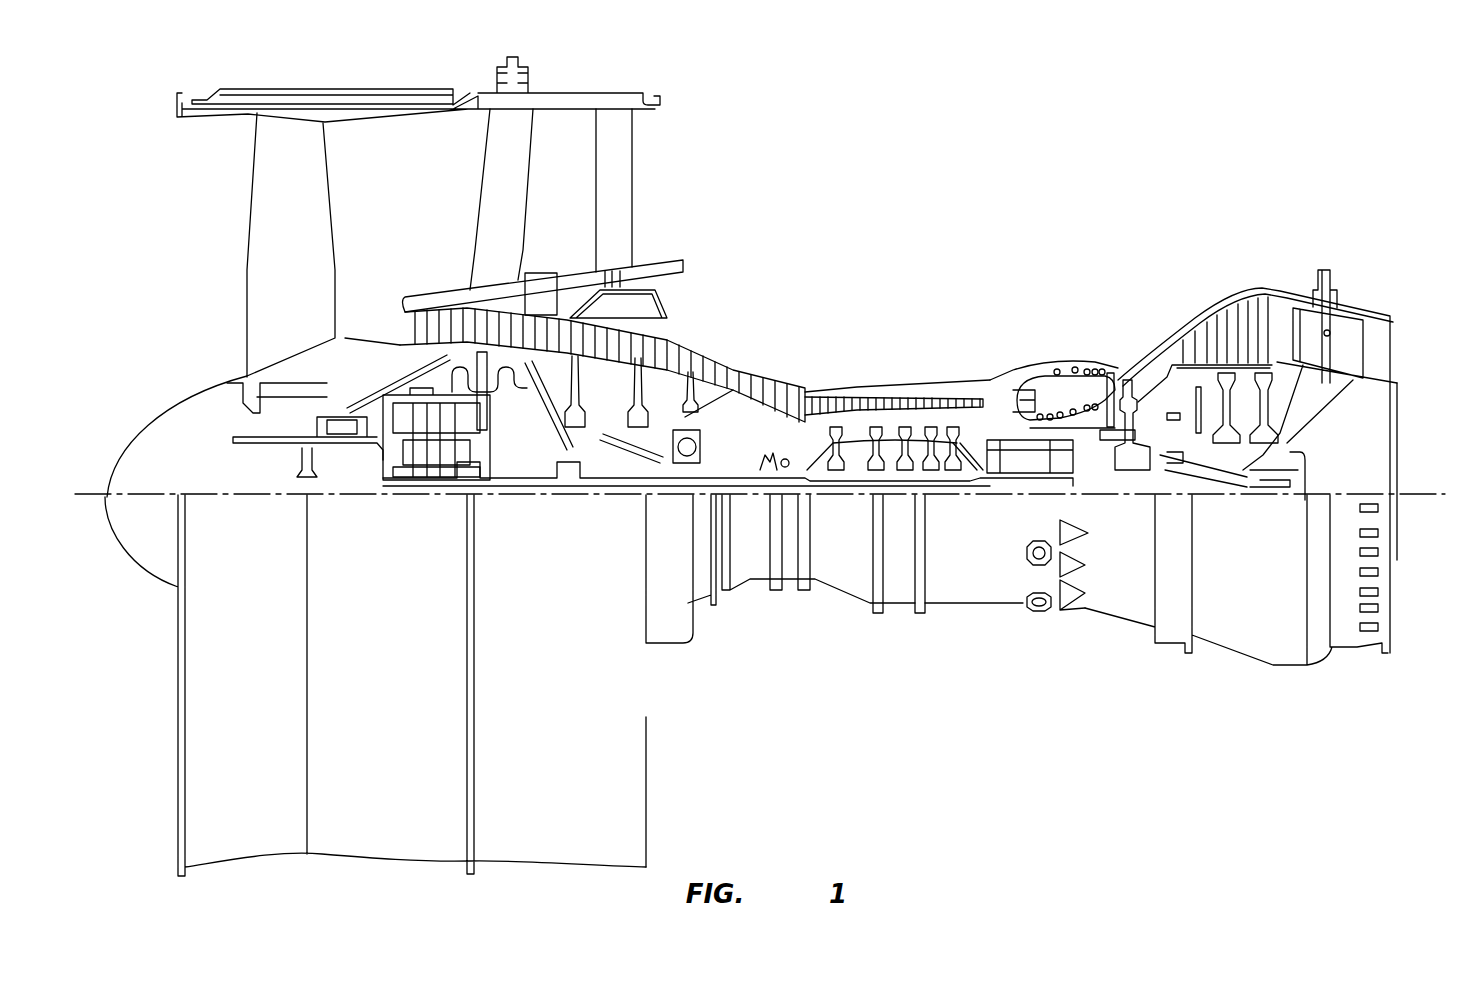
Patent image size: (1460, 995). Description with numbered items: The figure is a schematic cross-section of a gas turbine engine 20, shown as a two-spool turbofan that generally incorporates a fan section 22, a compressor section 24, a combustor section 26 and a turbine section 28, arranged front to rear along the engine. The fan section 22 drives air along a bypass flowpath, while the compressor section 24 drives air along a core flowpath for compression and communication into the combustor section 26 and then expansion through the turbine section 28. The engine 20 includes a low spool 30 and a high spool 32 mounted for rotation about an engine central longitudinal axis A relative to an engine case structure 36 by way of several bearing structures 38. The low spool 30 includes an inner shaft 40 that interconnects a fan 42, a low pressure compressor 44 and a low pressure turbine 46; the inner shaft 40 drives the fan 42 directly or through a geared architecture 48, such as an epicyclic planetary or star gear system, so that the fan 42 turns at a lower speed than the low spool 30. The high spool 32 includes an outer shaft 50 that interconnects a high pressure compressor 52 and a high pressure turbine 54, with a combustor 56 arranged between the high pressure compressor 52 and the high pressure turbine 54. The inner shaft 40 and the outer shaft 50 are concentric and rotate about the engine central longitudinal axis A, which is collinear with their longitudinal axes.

The gas turbine engine 20 is at (1108, 150).
The fan section 22 is at (173, 82).
The compressor section 24 is at (477, 235).
The combustor section 26 is at (1062, 235).
The turbine section 28 is at (1327, 235).
The low spool 30 is at (728, 446).
The high spool 32 is at (973, 420).
The engine case structure 36 is at (896, 606).
The bearing structures 38 is at (506, 573).
The inner shaft 40 is at (1090, 482).
The fan 42 is at (308, 303).
The low pressure compressor 44 is at (660, 342).
The low pressure turbine 46 is at (1235, 324).
The geared architecture 48 is at (430, 450).
The outer shaft 50 is at (1110, 442).
The high pressure compressor 52 is at (820, 393).
The high pressure turbine 54 is at (1128, 385).
The combustor 56 is at (1060, 396).
The engine central longitudinal axis A is at (1417, 493).